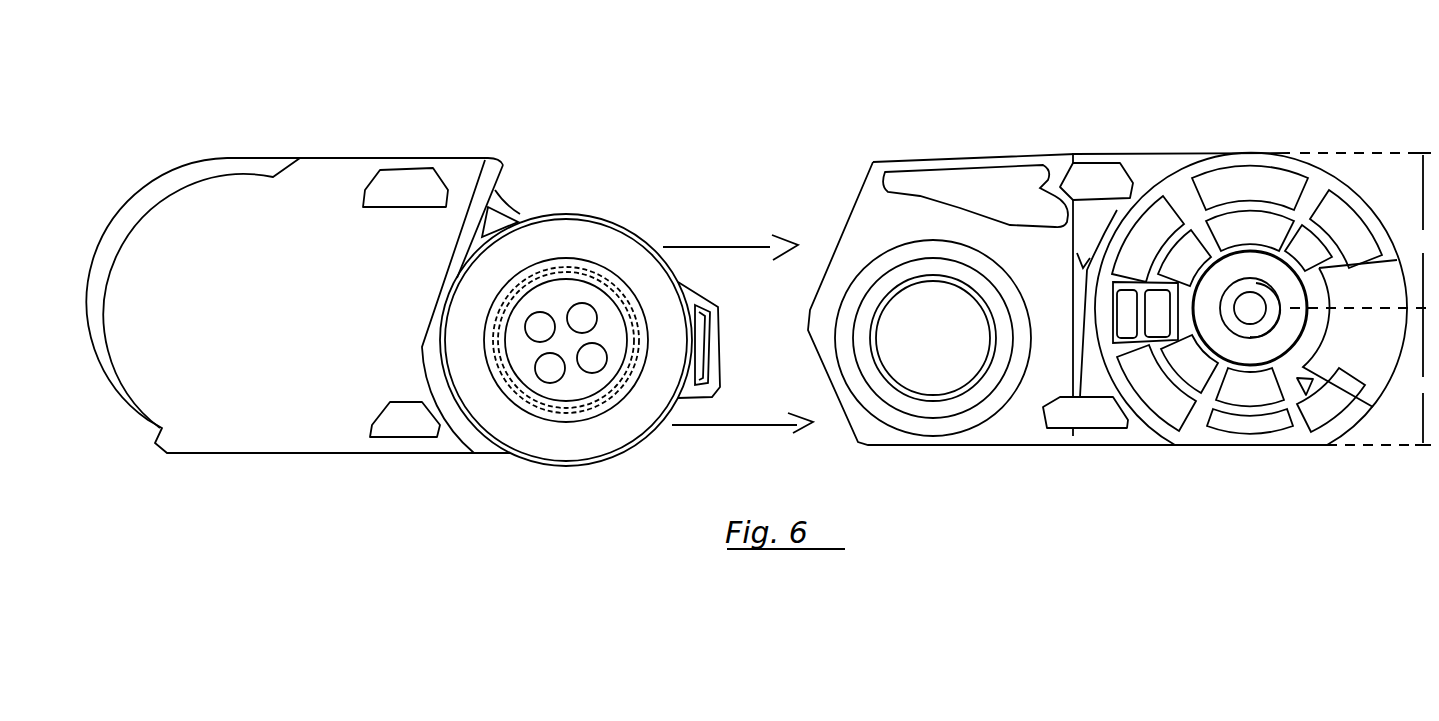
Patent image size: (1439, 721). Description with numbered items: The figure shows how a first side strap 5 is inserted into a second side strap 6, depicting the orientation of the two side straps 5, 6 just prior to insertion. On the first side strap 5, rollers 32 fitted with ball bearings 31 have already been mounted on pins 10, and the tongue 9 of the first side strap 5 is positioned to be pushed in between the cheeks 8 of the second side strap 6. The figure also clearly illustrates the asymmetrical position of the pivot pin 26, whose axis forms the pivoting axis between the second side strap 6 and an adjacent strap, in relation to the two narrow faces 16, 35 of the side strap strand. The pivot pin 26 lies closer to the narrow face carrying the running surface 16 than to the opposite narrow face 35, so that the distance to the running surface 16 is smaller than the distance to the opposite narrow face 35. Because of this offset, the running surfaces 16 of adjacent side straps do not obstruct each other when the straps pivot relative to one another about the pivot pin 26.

The first side strap 5 is at (424, 274).
The second side strap 6 is at (1120, 280).
The cheeks 8 is at (878, 228).
The tongue 9 is at (712, 335).
The pins 10 is at (556, 393).
The narrow face with running surface 16 is at (759, 285).
The pivot pin 26 is at (1250, 312).
The ball bearings 31 is at (559, 272).
The rollers 32 is at (590, 242).
The opposite narrow face 35 is at (1115, 152).